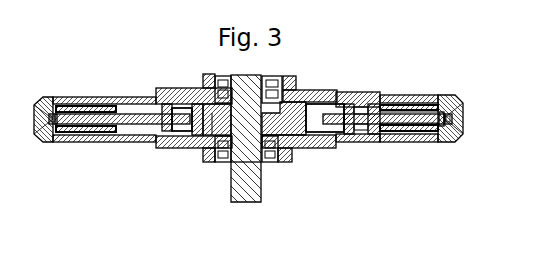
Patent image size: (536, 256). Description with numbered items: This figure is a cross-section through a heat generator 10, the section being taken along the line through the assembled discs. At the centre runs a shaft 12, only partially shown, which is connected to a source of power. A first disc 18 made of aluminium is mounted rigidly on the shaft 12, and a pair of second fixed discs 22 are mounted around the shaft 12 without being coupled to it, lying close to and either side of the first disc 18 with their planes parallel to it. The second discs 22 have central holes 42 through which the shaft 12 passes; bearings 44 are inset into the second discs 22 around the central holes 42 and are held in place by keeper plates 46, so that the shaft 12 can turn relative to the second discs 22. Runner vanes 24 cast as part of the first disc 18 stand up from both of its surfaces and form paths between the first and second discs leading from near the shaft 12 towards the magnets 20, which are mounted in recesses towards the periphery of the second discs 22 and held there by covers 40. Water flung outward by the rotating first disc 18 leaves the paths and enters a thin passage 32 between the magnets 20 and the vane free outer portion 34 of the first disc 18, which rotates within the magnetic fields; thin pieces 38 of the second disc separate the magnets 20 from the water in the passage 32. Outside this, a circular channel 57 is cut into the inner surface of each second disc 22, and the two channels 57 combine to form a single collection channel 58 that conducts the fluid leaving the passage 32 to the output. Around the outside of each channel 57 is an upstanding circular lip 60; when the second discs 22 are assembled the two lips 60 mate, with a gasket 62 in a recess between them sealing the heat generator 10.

The heat generator 10 is at (128, 160).
The shaft 12 is at (240, 184).
The first disc 18 is at (300, 108).
The magnets 20 is at (426, 100).
The second fixed discs 22 is at (360, 93).
The runner vanes 24 is at (150, 131).
The thin passage 32 is at (413, 108).
The vane free outer portion 34 is at (383, 114).
The thin pieces 38 is at (441, 106).
The covers 40 is at (84, 100).
The central holes 42 is at (259, 98).
The bearings 44 is at (273, 88).
The keeper plates 46 is at (210, 76).
The circular channel 57 is at (54, 125).
The collection channel 58 is at (449, 116).
The circular lip 60 is at (46, 100).
The gasket 62 is at (45, 136).